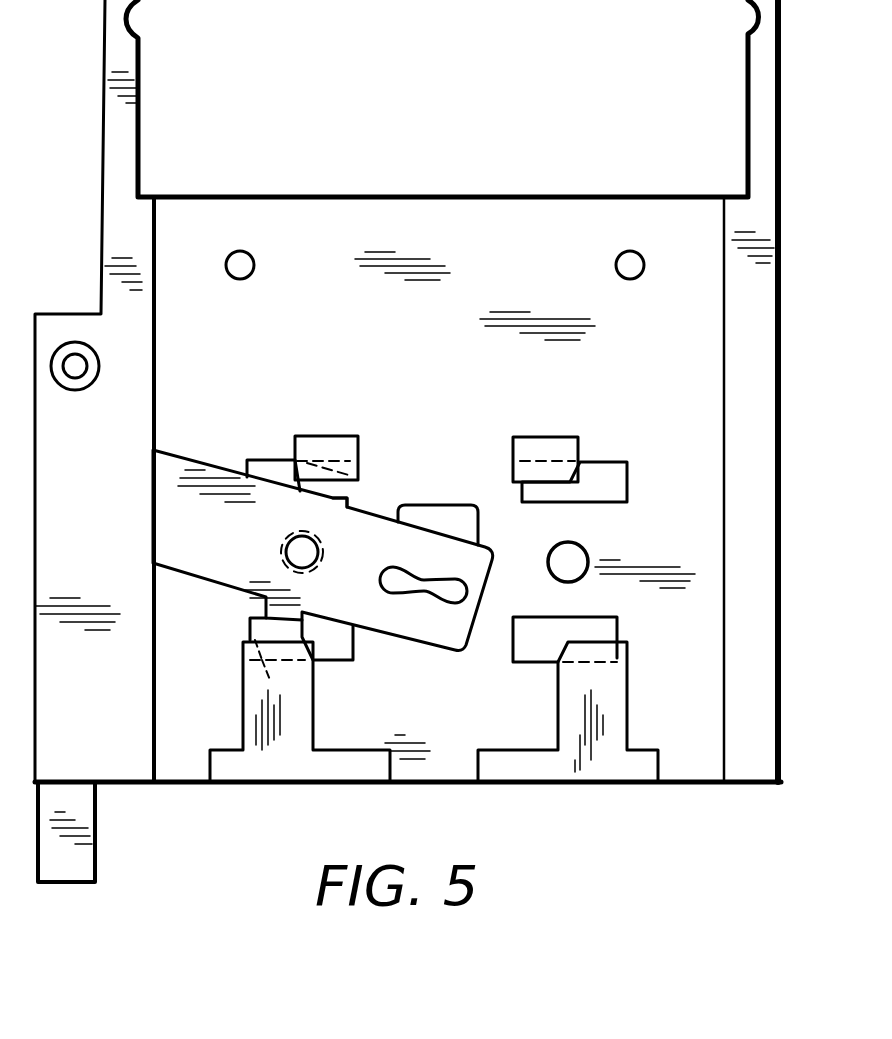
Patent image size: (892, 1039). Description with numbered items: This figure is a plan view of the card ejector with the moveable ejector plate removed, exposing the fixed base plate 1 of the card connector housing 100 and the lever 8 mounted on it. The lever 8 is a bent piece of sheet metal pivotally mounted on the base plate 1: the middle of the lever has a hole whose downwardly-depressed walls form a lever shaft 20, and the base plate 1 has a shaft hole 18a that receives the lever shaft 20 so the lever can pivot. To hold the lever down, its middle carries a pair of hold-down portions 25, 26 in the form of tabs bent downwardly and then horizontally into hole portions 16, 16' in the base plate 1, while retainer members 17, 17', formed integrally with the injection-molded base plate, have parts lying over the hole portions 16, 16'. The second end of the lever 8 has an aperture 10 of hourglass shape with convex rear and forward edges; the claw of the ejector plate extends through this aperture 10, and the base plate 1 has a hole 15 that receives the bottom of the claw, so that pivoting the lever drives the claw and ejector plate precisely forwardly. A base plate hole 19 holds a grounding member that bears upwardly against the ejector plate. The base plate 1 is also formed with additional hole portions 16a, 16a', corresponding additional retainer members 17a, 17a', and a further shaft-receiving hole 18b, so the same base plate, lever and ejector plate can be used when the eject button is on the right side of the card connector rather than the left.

The base plate 1 is at (710, 300).
The lever 8 is at (163, 517).
The aperture 10 is at (452, 603).
The hole 15 is at (442, 512).
The hole portion 16 is at (347, 661).
The hole portion 16' is at (256, 455).
The additional hole portion 16a is at (604, 632).
The additional hole portion 16a' is at (590, 433).
The retainer member 17 is at (290, 712).
The retainer member 17' is at (313, 420).
The additional retainer member 17a is at (568, 712).
The additional retainer member 17a' is at (546, 423).
The shaft hole 18a is at (322, 558).
The hole 18b is at (590, 552).
The base plate hole 19 is at (632, 258).
The lever shaft 20 is at (288, 543).
The hold-down portion 25 is at (278, 630).
The hold-down portion 26 is at (350, 492).
The card connector housing 100 is at (581, 813).